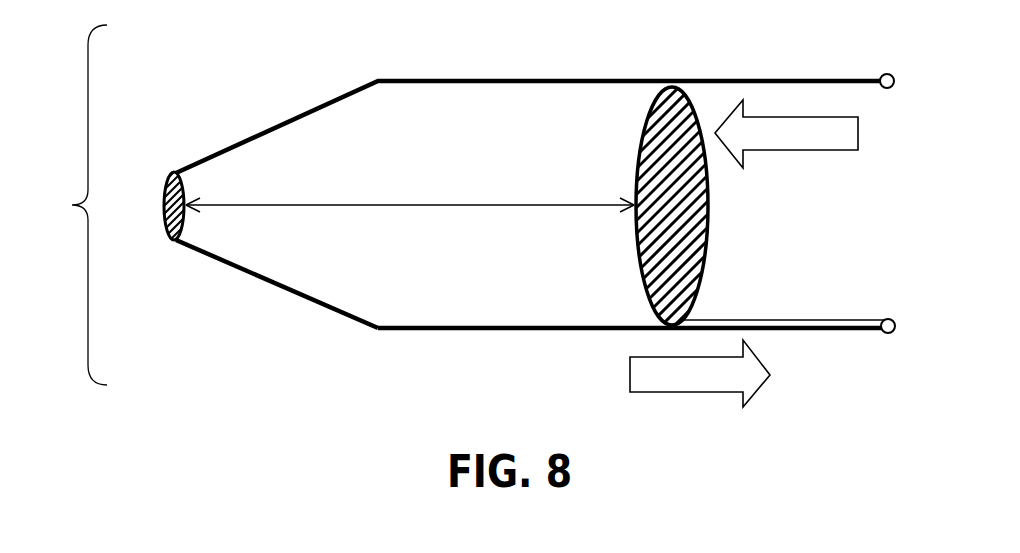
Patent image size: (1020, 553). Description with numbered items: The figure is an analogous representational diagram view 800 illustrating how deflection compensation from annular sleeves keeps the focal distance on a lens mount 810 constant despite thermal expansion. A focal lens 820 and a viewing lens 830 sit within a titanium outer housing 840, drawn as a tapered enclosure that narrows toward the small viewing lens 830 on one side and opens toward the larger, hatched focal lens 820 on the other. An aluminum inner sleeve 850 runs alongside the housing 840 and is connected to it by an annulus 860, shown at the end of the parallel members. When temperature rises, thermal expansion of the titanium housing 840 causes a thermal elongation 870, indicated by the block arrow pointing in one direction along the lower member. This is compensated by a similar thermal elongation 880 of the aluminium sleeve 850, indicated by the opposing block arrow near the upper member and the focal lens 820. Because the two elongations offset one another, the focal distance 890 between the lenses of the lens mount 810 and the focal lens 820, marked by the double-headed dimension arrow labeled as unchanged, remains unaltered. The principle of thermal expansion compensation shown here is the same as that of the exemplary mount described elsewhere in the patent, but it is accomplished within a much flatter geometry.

The representational diagram view 800 is at (232, 110).
The lens mount 810 is at (61, 205).
The focal lens 820 is at (638, 262).
The viewing lens 830 is at (165, 195).
The titanium outer housing 840 is at (318, 313).
The aluminum inner sleeve 850 is at (802, 318).
The annulus 860 is at (882, 334).
The thermal elongation 870 is at (700, 373).
The thermal elongation 880 is at (786, 134).
The focal distance 890 is at (410, 206).